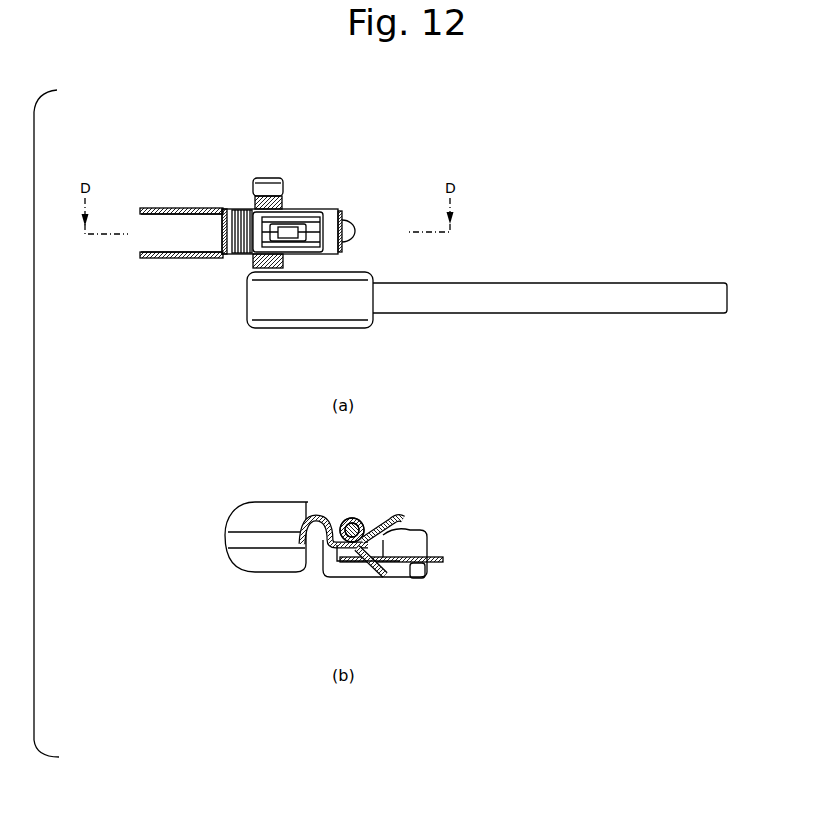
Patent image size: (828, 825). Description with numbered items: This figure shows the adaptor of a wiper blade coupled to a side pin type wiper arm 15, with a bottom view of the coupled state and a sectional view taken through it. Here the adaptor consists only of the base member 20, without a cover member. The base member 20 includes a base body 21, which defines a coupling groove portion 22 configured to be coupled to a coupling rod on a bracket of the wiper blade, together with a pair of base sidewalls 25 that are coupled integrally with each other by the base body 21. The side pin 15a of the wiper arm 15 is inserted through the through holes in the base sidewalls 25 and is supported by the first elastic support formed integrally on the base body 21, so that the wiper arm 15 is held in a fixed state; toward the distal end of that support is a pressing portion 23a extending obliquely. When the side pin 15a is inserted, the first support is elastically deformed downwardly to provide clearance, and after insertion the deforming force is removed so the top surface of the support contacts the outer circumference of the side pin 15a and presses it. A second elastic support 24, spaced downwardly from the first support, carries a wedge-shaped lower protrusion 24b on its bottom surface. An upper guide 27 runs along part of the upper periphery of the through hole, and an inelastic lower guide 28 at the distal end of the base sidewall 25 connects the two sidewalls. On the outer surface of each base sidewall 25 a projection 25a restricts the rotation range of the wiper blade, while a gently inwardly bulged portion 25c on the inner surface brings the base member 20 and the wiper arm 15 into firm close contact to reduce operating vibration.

The side pin type wiper arm 15 is at (672, 281).
The side pin 15a is at (267, 178).
The base member 20 is at (206, 199).
The base body 21 is at (312, 519).
The coupling groove portion 22 is at (238, 214).
The pressing portion 23a is at (396, 518).
The second elastic support 24 is at (350, 221).
The lower protrusion 24b is at (284, 225).
The base sidewall 25 is at (153, 207).
The projection 25a is at (282, 186).
The bulged portion 25c is at (158, 250).
The upper guide 27 is at (350, 519).
The lower guide 28 is at (416, 579).